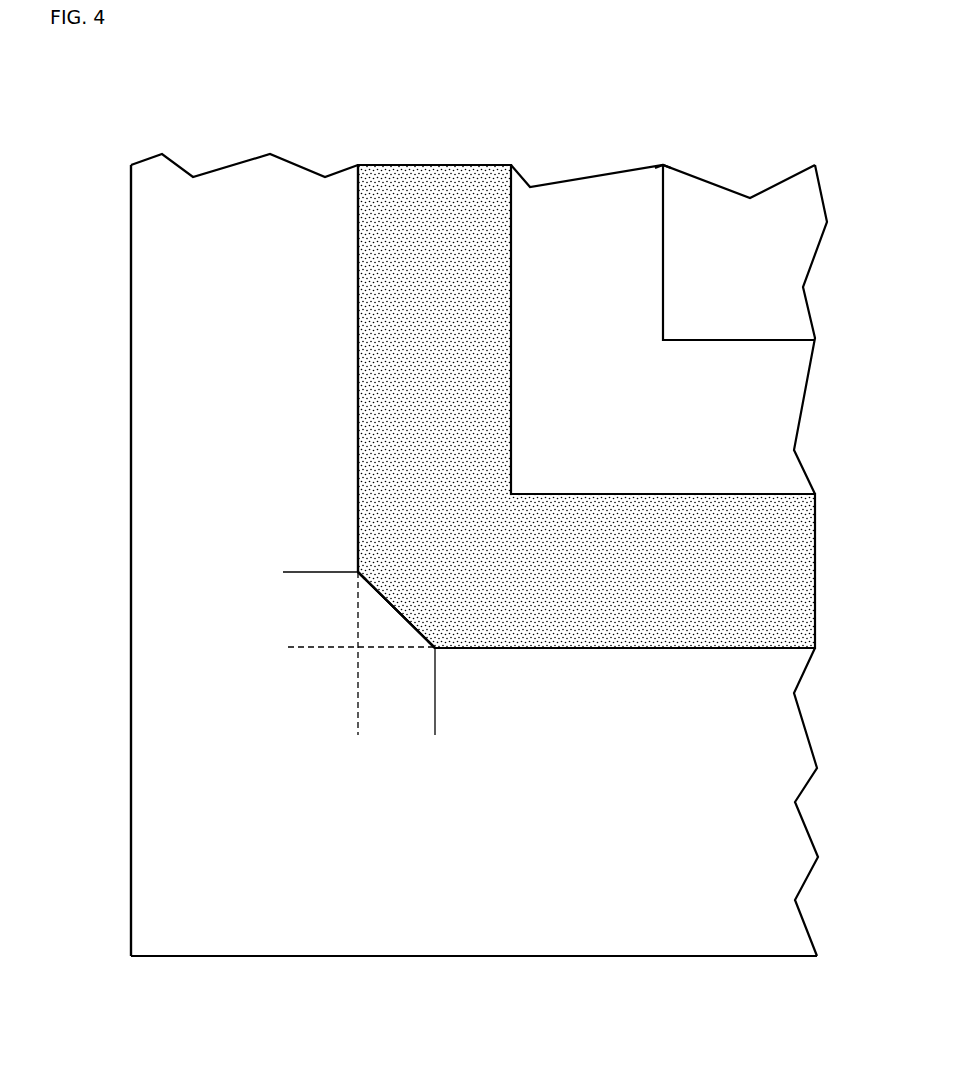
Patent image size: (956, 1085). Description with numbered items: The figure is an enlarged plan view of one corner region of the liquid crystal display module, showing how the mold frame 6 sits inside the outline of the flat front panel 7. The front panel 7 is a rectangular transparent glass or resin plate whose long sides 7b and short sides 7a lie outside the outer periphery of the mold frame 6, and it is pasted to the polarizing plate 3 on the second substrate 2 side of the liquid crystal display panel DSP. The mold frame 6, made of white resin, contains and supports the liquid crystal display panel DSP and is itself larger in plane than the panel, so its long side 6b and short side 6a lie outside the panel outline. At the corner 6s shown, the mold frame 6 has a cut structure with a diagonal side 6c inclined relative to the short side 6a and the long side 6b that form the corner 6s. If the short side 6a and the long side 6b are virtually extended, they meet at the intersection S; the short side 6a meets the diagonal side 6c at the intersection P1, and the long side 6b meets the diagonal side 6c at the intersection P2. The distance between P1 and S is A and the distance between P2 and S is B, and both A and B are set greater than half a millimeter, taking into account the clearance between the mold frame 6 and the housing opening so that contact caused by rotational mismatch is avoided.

The front panel 7 is at (260, 177).
The short sides 7a is at (435, 956).
The long sides 7b is at (131, 823).
The mold frame 6 is at (447, 187).
The short sides 6a is at (610, 648).
The long sides 6b is at (358, 293).
The diagonal side 6c is at (383, 590).
The corners 6s is at (397, 623).
The intersection P1 is at (435, 645).
The intersection P2 is at (362, 567).
The second substrate 2 is at (597, 198).
The polarizing plate 3 is at (712, 210).
The liquid crystal display panel DSP is at (663, 165).
The intersection S is at (358, 647).
The distance A is at (435, 725).
The distance B is at (293, 572).